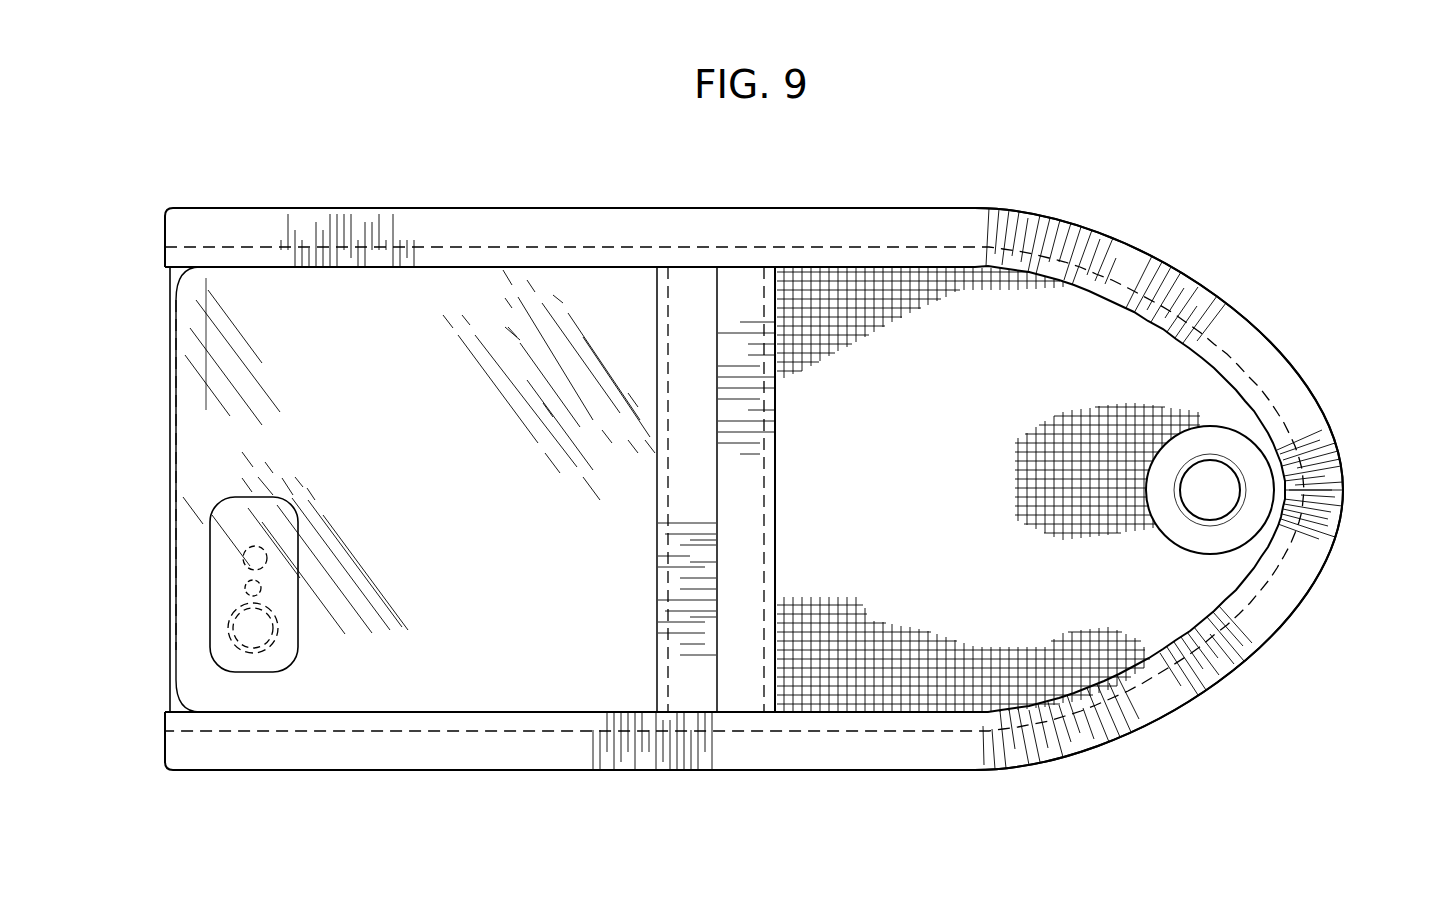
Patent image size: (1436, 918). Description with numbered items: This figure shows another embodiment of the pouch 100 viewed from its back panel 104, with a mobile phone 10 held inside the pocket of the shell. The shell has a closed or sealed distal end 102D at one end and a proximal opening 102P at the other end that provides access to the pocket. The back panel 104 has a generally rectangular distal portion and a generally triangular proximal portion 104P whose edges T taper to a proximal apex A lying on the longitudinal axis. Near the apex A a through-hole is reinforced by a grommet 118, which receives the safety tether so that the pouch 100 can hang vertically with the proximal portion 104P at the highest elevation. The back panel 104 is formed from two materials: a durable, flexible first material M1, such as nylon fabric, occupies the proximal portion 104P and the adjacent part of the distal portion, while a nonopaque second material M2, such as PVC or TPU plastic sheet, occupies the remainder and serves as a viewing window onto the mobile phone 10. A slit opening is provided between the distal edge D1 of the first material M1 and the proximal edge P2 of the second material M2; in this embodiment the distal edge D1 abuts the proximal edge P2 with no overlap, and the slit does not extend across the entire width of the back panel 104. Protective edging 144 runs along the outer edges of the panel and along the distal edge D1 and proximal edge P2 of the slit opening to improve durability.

The pouch 100 is at (745, 858).
The proximal opening 102P is at (1276, 314).
The distal end 102D is at (168, 658).
The back panel 104 is at (898, 682).
The proximal portion 104P is at (1340, 527).
The grommet 118 is at (1210, 553).
The edging 144 is at (448, 772).
The mobile phone 10 is at (342, 657).
The proximal edge P2 is at (715, 668).
The distal edge D1 is at (717, 677).
The first material M1 is at (955, 420).
The second material M2 is at (517, 580).
The edges T is at (1318, 392).
The apex A is at (1340, 463).